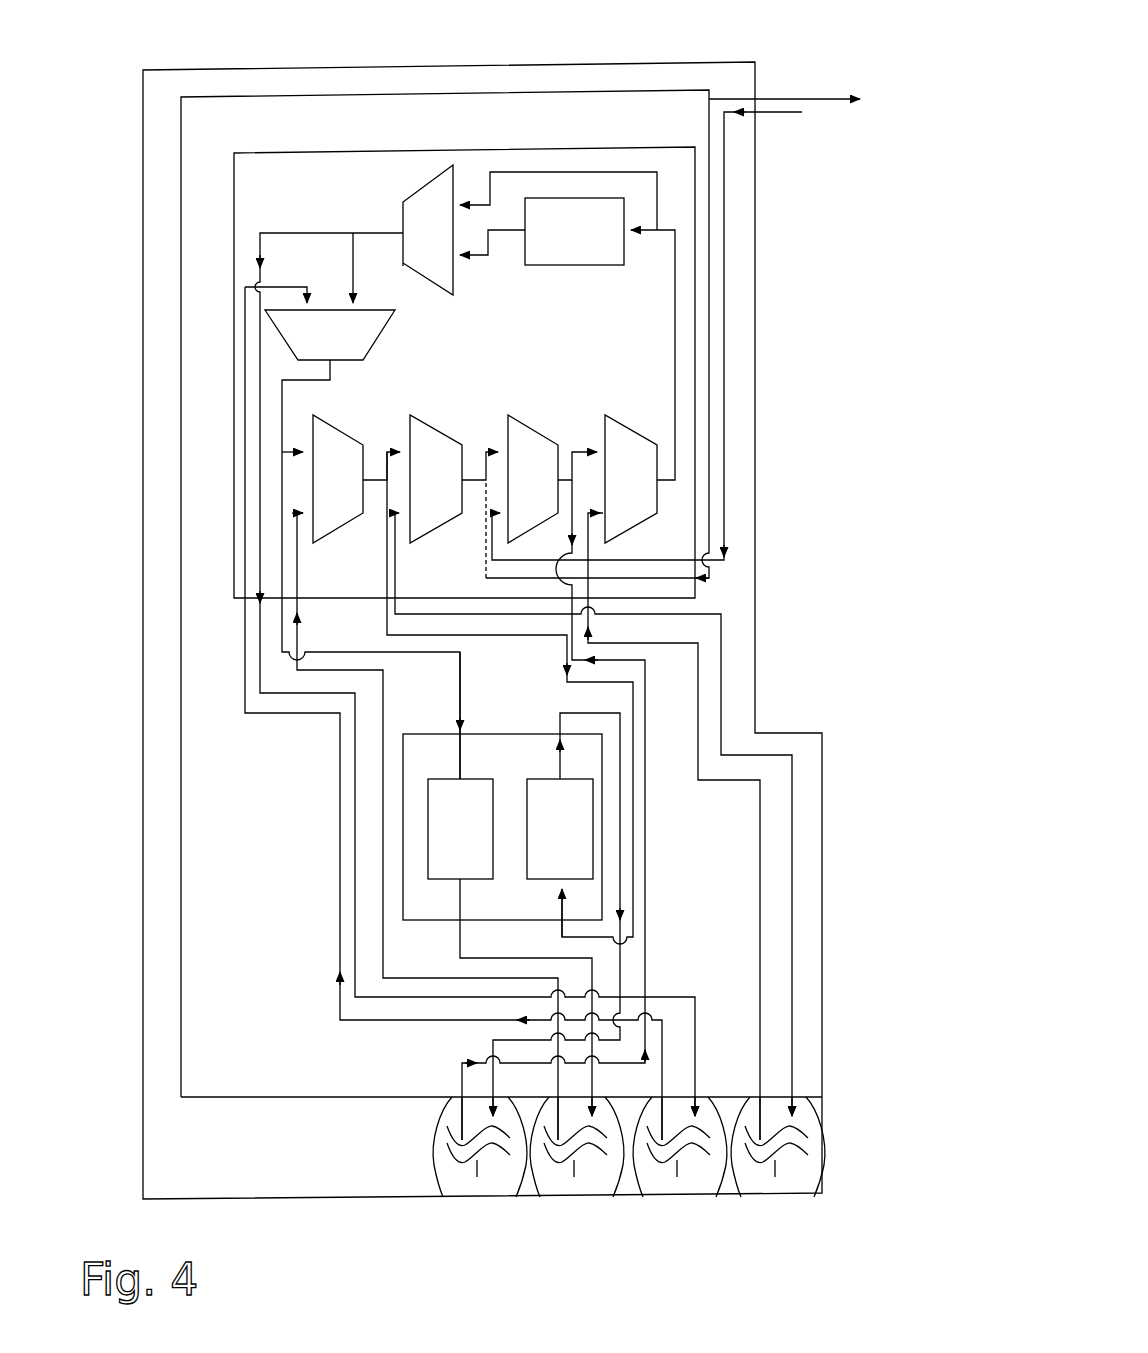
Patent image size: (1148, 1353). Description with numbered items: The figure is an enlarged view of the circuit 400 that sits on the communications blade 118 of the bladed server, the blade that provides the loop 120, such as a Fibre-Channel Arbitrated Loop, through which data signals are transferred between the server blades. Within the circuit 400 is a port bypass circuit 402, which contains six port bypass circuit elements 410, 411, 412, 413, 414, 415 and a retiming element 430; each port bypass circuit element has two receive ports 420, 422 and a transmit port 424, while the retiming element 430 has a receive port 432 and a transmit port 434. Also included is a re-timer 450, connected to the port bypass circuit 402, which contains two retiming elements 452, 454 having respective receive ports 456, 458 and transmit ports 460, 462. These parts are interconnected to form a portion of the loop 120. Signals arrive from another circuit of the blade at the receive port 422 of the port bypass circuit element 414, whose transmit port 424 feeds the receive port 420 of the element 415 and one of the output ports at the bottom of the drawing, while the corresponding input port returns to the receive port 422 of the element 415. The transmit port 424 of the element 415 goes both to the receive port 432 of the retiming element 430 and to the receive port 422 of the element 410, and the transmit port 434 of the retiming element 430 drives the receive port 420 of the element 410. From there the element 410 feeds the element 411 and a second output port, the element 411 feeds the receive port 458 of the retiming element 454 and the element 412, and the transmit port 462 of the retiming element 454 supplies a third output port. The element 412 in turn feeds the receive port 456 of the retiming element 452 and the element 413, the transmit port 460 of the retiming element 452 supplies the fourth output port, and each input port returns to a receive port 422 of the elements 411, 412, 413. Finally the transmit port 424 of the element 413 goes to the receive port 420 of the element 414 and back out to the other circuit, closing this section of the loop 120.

The communications blade 118 is at (482, 599).
The circuit 400 is at (755, 62).
The port bypass circuit 402 is at (320, 178).
The loop 120 is at (773, 99).
The port bypass circuit element 410 is at (428, 230).
The port bypass circuit element 411 is at (330, 335).
The port bypass circuit element 412 is at (338, 479).
The port bypass circuit element 413 is at (436, 479).
The port bypass circuit element 414 is at (533, 479).
The port bypass circuit element 415 is at (631, 479).
The receive port 420 is at (380, 306).
The receive port 422 is at (457, 205).
The transmit port 424 is at (403, 233).
The retiming element 430 is at (574, 231).
The receive port 432 is at (626, 232).
The transmit port 434 is at (520, 235).
The re-timer 450 is at (587, 752).
The retiming element 452 is at (560, 829).
The retiming element 454 is at (460, 829).
The receive port 456 is at (560, 882).
The receive port 458 is at (460, 775).
The transmit port 460 is at (560, 775).
The transmit port 462 is at (460, 882).